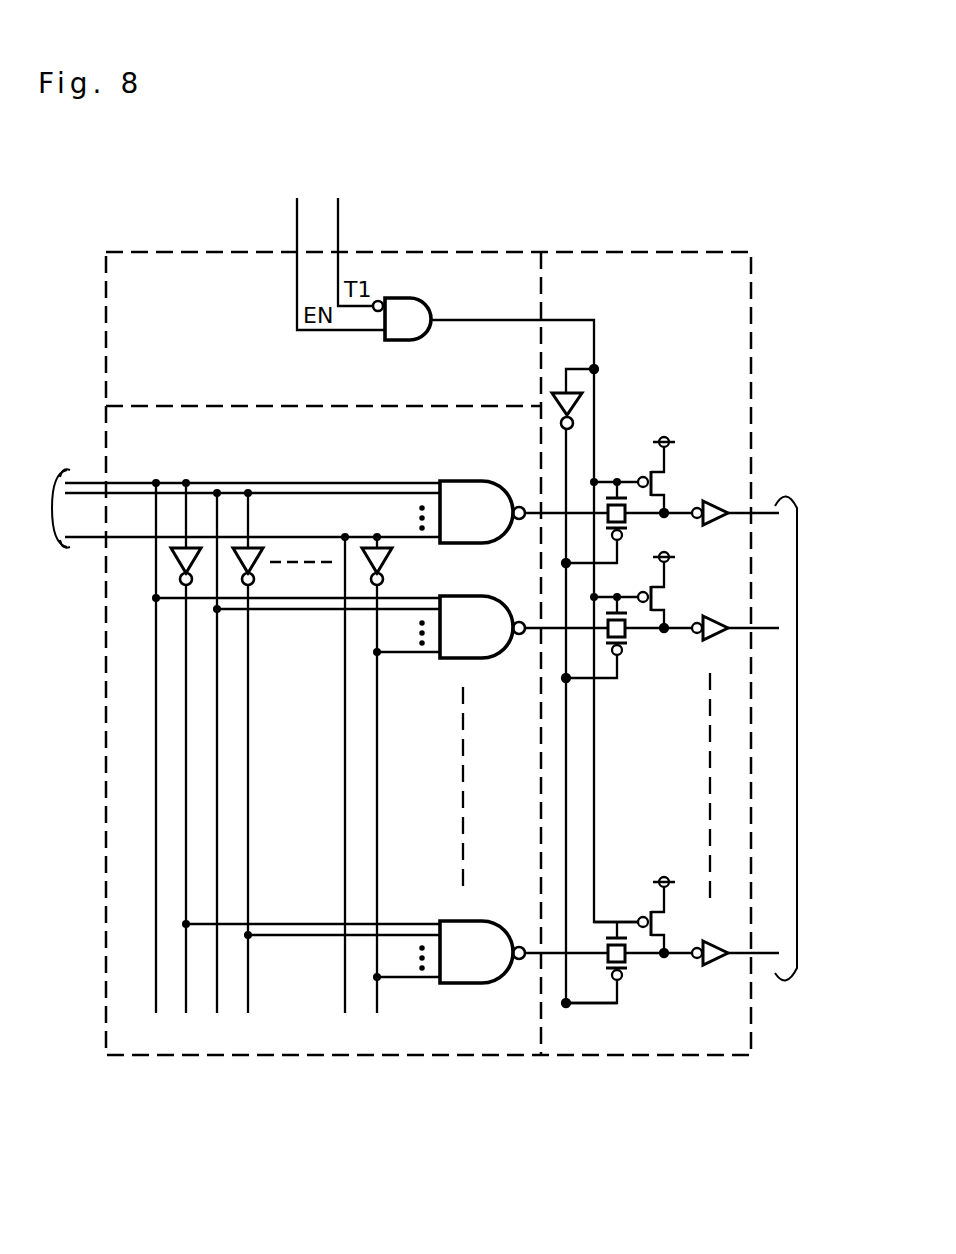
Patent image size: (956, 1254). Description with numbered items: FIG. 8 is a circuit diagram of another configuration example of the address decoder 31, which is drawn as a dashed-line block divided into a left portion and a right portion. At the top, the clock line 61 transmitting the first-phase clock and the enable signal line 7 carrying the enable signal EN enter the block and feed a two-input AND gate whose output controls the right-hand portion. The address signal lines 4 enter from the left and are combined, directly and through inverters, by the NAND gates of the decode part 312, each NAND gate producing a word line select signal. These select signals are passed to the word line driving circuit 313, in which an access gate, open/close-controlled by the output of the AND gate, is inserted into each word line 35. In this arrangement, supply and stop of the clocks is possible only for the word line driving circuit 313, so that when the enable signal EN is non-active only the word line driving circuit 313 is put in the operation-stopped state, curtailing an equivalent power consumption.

The address signal lines 4 is at (60, 472).
The enable signal line 7 is at (297, 210).
The clock line 61 is at (338, 215).
The address decoder 31 is at (717, 246).
The decode part 312 is at (190, 1056).
The word line driving circuit 313 is at (628, 1057).
The word line 35 is at (797, 500).